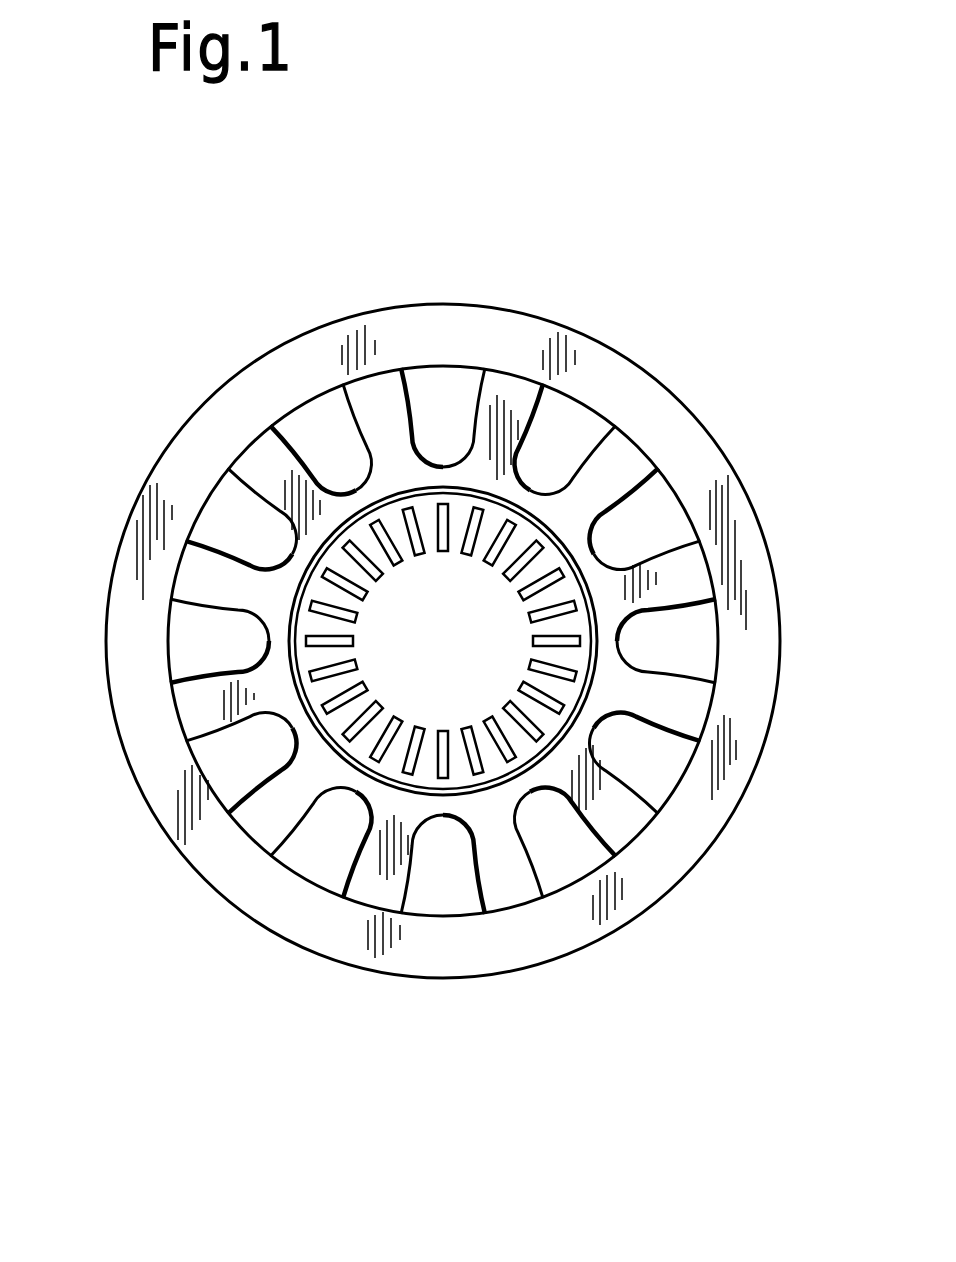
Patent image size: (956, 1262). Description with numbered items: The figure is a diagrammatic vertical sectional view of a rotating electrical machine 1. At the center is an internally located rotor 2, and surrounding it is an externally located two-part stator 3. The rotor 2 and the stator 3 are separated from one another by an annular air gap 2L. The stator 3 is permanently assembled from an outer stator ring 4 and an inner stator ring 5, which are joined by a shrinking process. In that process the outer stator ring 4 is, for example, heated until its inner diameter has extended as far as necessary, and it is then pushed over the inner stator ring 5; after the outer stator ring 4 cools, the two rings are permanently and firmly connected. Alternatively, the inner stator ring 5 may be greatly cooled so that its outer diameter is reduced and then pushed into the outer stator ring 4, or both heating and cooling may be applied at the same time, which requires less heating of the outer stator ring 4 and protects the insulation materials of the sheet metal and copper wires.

The rotating electrical machine 1 is at (508, 202).
The rotor 2 is at (317, 627).
The annular air gap 2L is at (535, 523).
The stator 3 is at (513, 897).
The outer stator ring 4 is at (155, 788).
The inner stator ring 5 is at (610, 812).